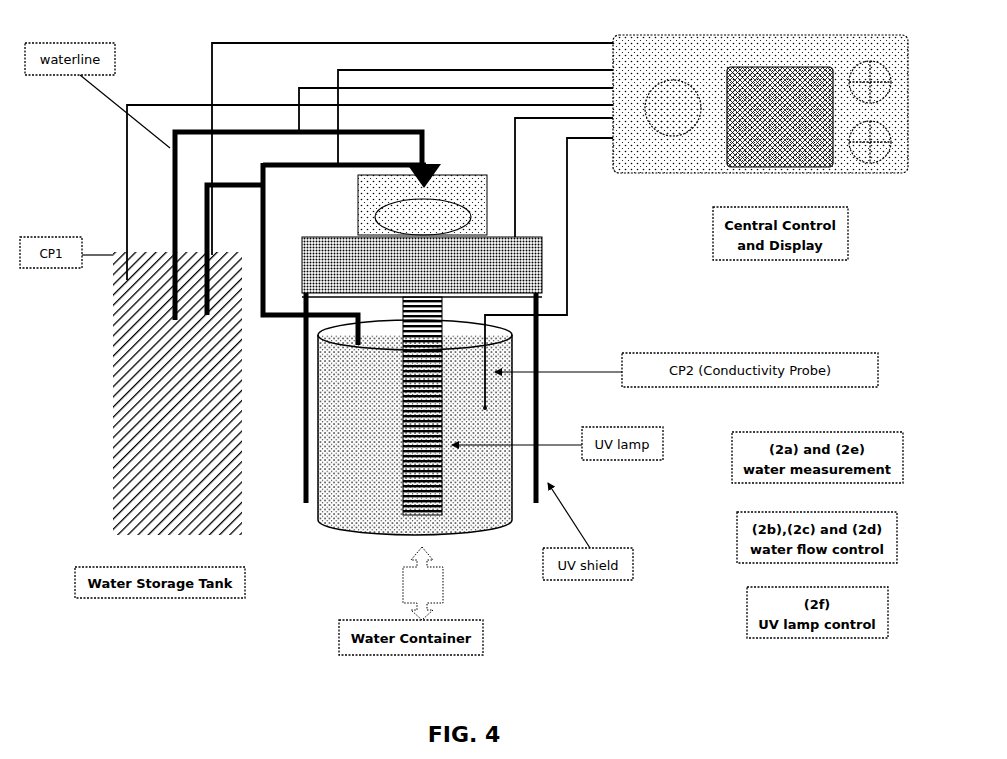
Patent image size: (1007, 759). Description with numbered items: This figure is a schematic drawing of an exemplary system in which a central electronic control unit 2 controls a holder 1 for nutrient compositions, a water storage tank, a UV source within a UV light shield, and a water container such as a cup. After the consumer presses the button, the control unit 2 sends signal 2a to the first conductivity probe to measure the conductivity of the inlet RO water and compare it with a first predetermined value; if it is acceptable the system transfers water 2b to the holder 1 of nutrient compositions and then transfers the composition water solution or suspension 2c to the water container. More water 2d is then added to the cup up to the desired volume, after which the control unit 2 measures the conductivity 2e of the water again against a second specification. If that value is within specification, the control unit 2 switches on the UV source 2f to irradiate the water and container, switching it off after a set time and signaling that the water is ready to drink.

The water treatment unit 1 is at (422, 205).
The central control and display unit 2 is at (673, 158).
The signal to the first conductivity probe 2a is at (370, 192).
The water transfer to the nutrient composition container 2b is at (438, 99).
The transfer of composition water solution/suspension 2c is at (475, 106).
The addition of more water 2d is at (412, 137).
The second conductivity measurement 2e is at (548, 274).
The UV source switching 2f is at (564, 177).